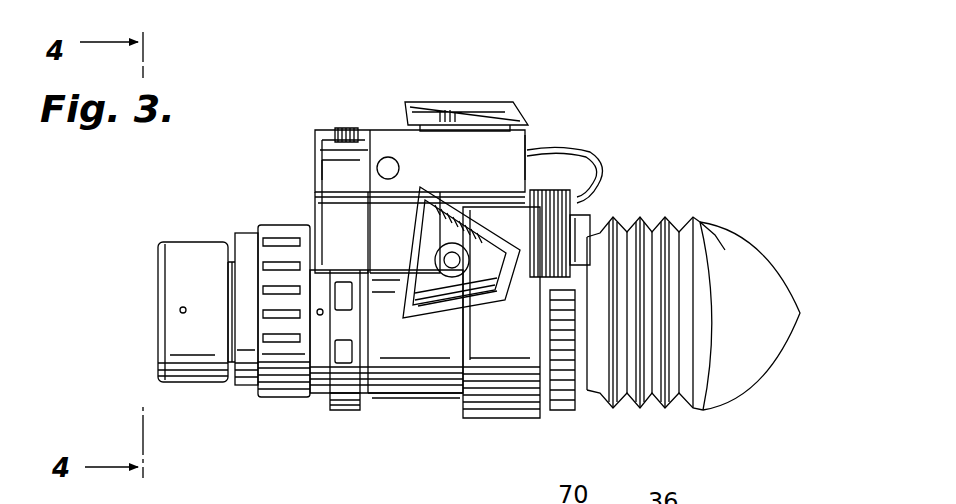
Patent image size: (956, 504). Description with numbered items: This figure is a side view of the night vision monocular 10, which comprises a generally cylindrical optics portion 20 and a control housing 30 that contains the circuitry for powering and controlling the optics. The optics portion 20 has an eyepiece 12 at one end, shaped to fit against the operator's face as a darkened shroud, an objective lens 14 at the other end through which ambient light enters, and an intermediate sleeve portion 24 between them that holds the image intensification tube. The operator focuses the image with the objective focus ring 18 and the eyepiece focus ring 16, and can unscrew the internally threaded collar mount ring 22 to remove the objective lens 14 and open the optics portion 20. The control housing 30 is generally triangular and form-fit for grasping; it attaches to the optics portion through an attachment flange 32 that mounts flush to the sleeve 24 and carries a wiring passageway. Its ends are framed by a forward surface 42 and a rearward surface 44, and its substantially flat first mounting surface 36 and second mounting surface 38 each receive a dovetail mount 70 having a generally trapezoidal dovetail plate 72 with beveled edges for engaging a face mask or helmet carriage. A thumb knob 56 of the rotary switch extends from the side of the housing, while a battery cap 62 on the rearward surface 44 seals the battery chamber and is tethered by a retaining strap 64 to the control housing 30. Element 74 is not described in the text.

The night vision monocular 10 is at (653, 158).
The eyepiece 12 is at (757, 333).
The objective lens 14 is at (158, 308).
The eyepiece focus ring 16 is at (560, 428).
The objective focus ring 18 is at (262, 222).
The optics portion 20 is at (248, 395).
The collar mount ring 22 is at (340, 407).
The intermediate sleeve portion 24 is at (378, 398).
The control housing 30 is at (340, 120).
The attachment flange 32 is at (393, 297).
The first mounting surface 36 is at (387, 131).
The second mounting surface 38 is at (485, 212).
The forward surface 42 is at (316, 200).
The rearward surface 44 is at (527, 135).
The thumb knob 56 is at (330, 152).
The battery cap 62 is at (577, 202).
The retaining strap 64 is at (597, 150).
The dovetail mount 70 is at (442, 100).
The dovetail plate 72 is at (487, 103).
The illuminator lens 74 is at (487, 297).